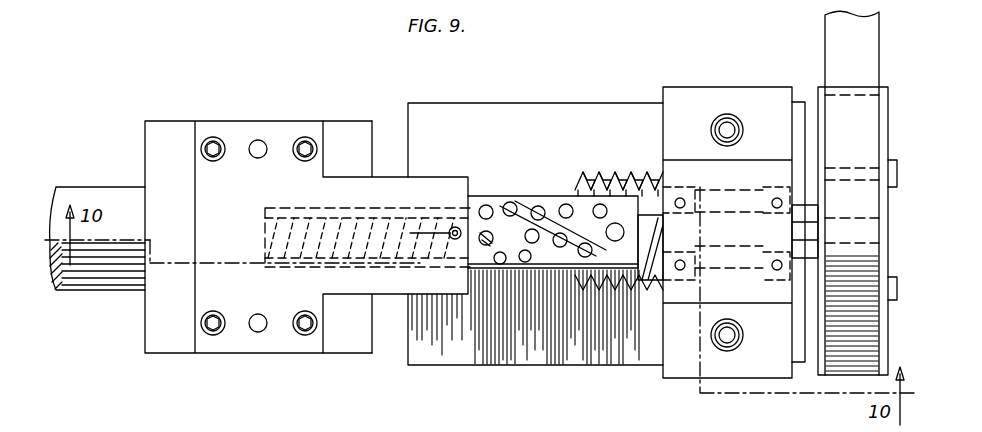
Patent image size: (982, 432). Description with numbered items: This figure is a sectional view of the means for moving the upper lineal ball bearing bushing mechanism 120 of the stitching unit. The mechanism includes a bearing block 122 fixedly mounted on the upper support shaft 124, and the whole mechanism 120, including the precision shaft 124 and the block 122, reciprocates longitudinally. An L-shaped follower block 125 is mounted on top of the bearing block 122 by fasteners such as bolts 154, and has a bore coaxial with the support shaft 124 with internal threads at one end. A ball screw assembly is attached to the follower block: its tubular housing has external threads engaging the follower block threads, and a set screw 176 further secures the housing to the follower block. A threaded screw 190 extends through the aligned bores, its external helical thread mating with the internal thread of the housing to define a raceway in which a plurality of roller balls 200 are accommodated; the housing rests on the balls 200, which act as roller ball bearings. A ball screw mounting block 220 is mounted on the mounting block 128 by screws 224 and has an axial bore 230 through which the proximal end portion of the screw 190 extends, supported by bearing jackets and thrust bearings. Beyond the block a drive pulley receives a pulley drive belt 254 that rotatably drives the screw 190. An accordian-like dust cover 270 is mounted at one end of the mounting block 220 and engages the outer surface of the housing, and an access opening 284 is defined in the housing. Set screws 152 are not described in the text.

The upper lineal ball bearing bushing mechanism 120 is at (344, 133).
The bearing block 122 is at (165, 142).
The upper support shaft 124 is at (95, 270).
The L-shaped follower block 125 is at (300, 120).
The mounting block 128 is at (543, 112).
The mounting plate 152 is at (236, 130).
The bolt 154 is at (213, 332).
The set screw 176 is at (455, 227).
The threaded screw 190 is at (265, 226).
The roller balls 200 is at (485, 205).
The ball screw mounting block 220 is at (688, 100).
The screw 224 is at (731, 338).
The axial bore 230 is at (706, 270).
The pulley drive belt 254 is at (865, 72).
The accordian-like dust cover 270 is at (604, 185).
The access opening 284 is at (560, 272).